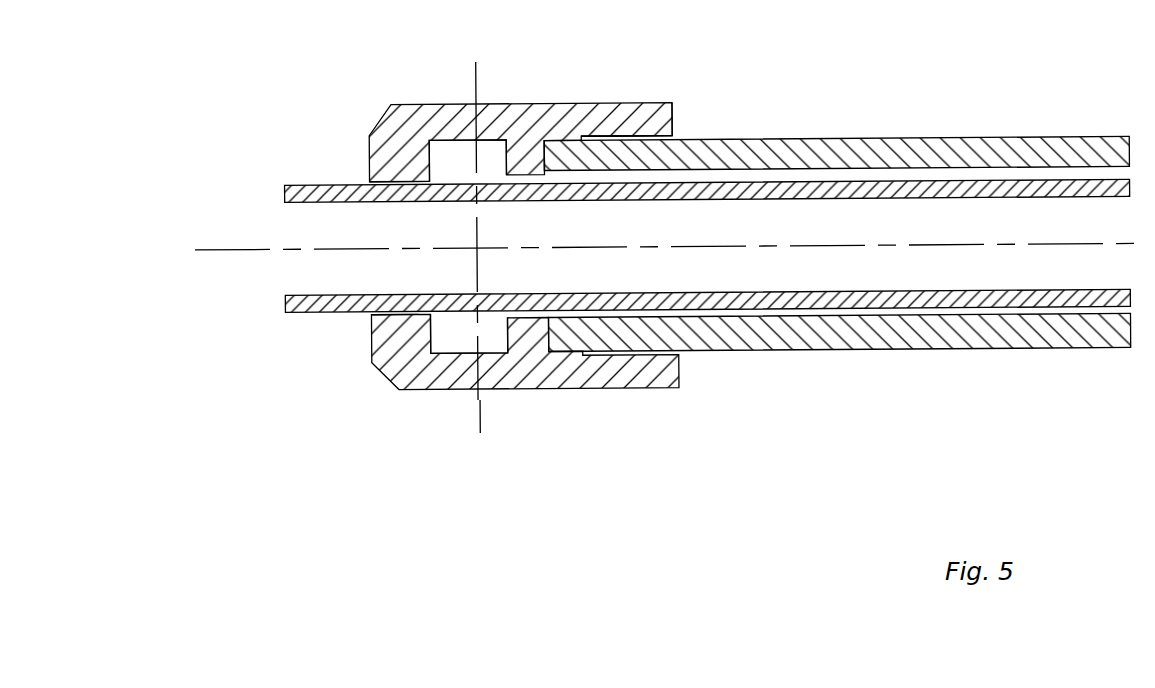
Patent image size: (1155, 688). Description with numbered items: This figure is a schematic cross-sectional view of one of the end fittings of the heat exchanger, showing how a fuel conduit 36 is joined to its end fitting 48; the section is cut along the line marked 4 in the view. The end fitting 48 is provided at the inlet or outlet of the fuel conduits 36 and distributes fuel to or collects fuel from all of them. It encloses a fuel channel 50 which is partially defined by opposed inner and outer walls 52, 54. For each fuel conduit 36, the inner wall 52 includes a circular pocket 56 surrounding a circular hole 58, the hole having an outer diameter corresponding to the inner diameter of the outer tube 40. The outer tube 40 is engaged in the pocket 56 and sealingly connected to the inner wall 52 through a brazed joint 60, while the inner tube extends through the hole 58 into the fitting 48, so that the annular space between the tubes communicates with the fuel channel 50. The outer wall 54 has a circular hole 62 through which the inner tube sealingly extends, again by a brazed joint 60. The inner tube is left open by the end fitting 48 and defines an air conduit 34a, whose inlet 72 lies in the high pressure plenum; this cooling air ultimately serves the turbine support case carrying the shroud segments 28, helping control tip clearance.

The shroud segments 28 is at (1067, 304).
The air conduit 34a is at (1063, 216).
The fuel conduits 36 is at (818, 316).
The outer tube 40 is at (915, 142).
The end fitting 48 is at (650, 389).
The fuel channel 50 is at (455, 340).
The inner wall 52 is at (533, 153).
The outer wall 54 is at (397, 143).
The circular pocket 56 is at (628, 141).
The circular hole 58 is at (513, 172).
The brazed joint 60 is at (365, 181).
The circular hole 62 is at (374, 296).
The inlet 72 is at (667, 248).
The section line 4- 4 is at (516, 72).